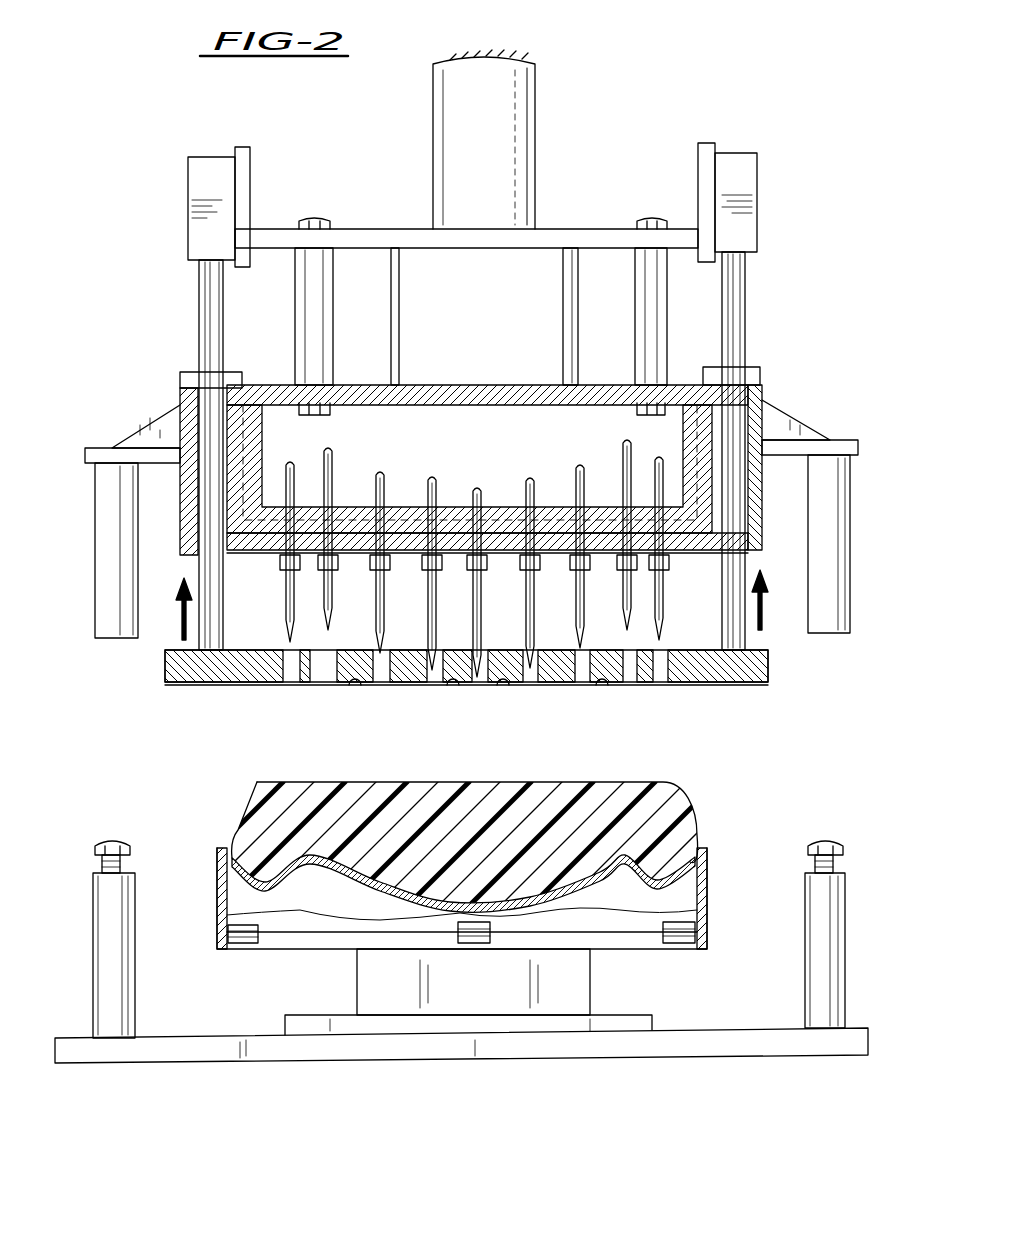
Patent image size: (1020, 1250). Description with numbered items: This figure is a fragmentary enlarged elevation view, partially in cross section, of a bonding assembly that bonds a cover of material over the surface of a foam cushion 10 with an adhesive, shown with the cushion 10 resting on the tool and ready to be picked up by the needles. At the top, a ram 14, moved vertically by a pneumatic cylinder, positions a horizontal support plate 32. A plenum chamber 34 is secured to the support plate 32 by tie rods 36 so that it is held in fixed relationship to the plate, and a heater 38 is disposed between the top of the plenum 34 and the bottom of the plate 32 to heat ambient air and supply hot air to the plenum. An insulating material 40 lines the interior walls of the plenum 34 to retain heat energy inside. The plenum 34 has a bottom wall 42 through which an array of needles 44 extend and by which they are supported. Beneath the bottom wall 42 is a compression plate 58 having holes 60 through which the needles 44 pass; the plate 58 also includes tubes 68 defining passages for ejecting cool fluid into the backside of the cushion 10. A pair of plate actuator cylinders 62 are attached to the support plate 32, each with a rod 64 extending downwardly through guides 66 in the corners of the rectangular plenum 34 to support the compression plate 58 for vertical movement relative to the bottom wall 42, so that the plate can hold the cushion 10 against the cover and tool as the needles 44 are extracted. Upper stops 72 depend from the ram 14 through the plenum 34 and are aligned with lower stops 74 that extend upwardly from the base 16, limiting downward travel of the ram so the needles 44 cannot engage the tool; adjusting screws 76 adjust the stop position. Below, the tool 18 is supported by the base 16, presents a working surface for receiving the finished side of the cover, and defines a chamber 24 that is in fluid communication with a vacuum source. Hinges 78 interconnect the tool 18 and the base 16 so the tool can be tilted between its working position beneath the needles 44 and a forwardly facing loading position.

The foam cushion 10 is at (698, 802).
The ram 14 is at (525, 115).
The base 16 is at (868, 1040).
The tool 18 is at (225, 890).
The chamber 24 is at (700, 872).
The support plate 32 is at (592, 236).
The plenum chamber 34 is at (712, 378).
The tie rods 36 is at (305, 325).
The heater 38 is at (423, 275).
The insulating material 40 is at (455, 518).
The bottom wall 42 is at (705, 556).
The needles 44 is at (325, 615).
The compression plate 58 is at (770, 660).
The holes 60 is at (383, 666).
The plate actuator cylinders 62 is at (192, 187).
The rod 64 is at (207, 315).
The guides 66 is at (178, 430).
The tubes 68 is at (355, 690).
The upper stops 72 is at (848, 542).
The lower stops 74 is at (92, 912).
The adjusting screws 76 is at (100, 845).
The hinges 78 is at (242, 946).